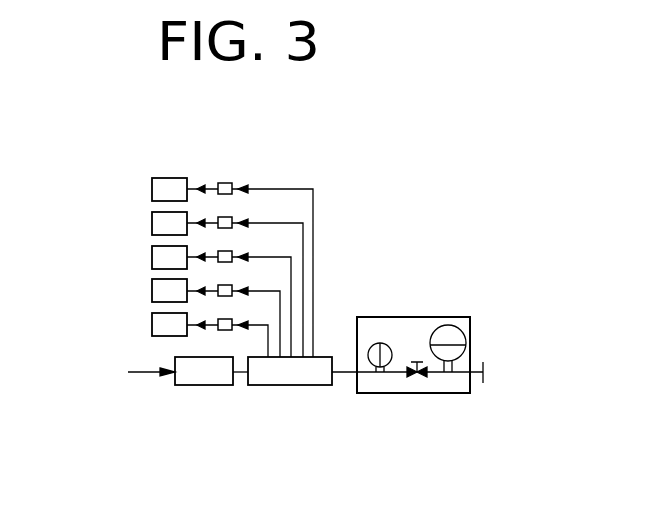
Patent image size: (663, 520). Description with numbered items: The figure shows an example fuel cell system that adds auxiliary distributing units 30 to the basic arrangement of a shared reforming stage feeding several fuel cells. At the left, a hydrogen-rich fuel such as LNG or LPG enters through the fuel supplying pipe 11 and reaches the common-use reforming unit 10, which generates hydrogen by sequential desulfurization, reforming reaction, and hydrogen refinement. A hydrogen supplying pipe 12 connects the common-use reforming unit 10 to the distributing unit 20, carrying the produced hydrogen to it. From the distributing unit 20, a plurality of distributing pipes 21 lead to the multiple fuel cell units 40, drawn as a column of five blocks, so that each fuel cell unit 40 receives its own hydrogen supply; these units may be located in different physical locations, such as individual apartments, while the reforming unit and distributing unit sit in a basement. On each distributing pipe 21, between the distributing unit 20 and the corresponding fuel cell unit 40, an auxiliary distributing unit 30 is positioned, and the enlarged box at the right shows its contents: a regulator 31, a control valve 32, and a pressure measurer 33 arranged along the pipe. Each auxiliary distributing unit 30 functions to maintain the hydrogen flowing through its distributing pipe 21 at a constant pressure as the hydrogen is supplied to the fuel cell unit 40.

The common-use reforming unit 10 is at (205, 385).
The fuel supplying pipe 11 is at (143, 374).
The hydrogen supplying pipe 12 is at (240, 373).
The distributing unit 20 is at (270, 385).
The distributing pipes 21 is at (314, 236).
The auxiliary distributing unit 30 is at (225, 319).
The regulator 31 is at (370, 374).
The control valve 32 is at (412, 378).
The pressure measurer 33 is at (440, 374).
The fuel cell unit 40 is at (152, 322).